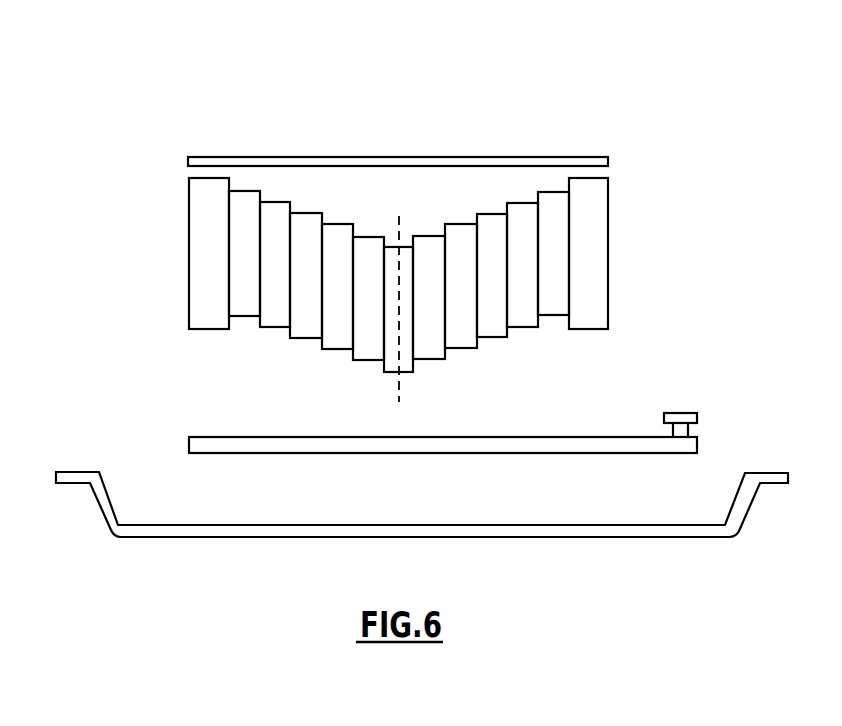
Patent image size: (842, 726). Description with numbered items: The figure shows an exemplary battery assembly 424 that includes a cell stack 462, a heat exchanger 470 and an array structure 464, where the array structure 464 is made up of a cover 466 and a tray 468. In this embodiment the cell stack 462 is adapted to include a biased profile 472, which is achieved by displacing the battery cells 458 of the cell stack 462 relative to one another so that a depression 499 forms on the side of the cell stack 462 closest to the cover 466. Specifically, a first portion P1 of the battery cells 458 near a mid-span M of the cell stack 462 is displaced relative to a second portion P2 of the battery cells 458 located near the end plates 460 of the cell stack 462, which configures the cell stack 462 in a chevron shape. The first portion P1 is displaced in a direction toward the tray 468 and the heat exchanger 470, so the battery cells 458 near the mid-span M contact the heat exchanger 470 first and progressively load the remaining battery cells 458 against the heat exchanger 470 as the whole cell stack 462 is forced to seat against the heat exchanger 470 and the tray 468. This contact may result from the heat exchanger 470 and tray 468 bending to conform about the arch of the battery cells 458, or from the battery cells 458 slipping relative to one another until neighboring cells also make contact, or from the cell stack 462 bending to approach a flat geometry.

The battery assembly 424 is at (376, 228).
The battery cells 458 is at (277, 210).
The end plates 460 is at (200, 282).
The cell stack 462 is at (376, 274).
The array structure 464 is at (452, 136).
The cover 466 is at (517, 163).
The tray 468 is at (444, 537).
The heat exchanger 470 is at (694, 442).
The biased profile 472 is at (308, 344).
The depression 499 is at (370, 203).
The mid-span M is at (400, 387).
The first portion P1 is at (365, 360).
The second portion P2 is at (270, 328).